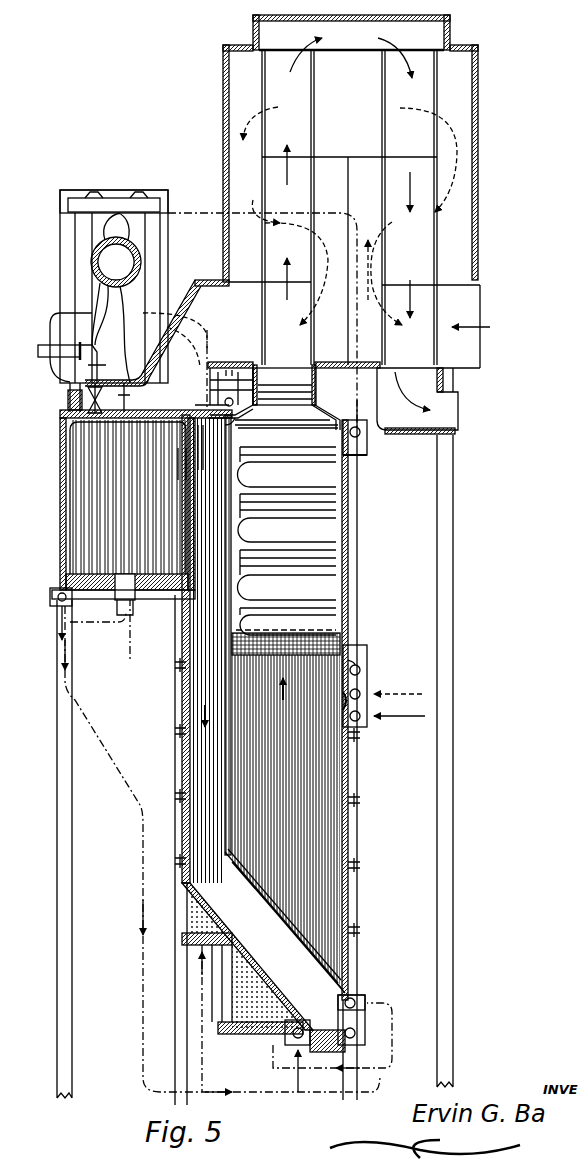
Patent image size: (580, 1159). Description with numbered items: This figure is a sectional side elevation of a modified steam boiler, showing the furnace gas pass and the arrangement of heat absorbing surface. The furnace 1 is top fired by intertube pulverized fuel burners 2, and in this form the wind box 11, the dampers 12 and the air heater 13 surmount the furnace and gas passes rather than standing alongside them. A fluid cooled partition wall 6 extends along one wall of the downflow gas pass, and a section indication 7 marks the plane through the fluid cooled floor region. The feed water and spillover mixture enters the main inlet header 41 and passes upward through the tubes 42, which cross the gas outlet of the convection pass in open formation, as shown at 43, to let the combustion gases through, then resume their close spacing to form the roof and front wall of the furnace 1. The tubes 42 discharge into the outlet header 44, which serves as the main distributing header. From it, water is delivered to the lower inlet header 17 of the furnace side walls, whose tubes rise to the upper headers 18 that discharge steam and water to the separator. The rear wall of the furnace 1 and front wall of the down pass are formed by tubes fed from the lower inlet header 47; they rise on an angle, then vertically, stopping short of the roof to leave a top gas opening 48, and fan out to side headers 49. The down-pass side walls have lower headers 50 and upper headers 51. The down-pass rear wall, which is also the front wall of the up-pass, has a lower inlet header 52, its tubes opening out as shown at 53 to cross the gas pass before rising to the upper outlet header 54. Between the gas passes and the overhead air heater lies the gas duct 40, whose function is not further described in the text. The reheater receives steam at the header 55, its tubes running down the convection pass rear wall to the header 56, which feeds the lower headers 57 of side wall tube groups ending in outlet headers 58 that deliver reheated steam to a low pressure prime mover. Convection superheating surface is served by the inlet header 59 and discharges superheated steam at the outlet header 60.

The air heater 13 is at (287, 224).
The supply column (section 7-7) 7 is at (92, 306).
The wind box 11 is at (235, 305).
The pulverized fuel burners 2 is at (100, 358).
The upper headers 18 is at (162, 340).
The dampers 12 is at (132, 400).
The fluid cooled partition wall 6 is at (206, 357).
The upper headers 51 is at (220, 380).
The upper outlet header 54 is at (236, 400).
The duct 40 is at (302, 380).
The open formation tubes 43 is at (272, 432).
The top gas opening 48 is at (200, 420).
The inlet header 59 is at (364, 437).
The tubes 42 is at (346, 562).
The outlet headers 58 is at (326, 630).
The reheater inlet header 55 is at (366, 694).
The outlet header 60 is at (362, 666).
The main inlet header 41 is at (362, 722).
The furnace 1 is at (136, 518).
The side headers 49 is at (92, 458).
The outlet header 44 is at (52, 606).
The lower inlet header 17 is at (218, 849).
The opened out tubes 53 is at (282, 905).
The lower headers 50 is at (182, 955).
The lower headers 57 is at (228, 1034).
The lower inlet header 47 is at (290, 1040).
The header 56 is at (356, 1000).
The lower inlet header 52 is at (365, 1032).